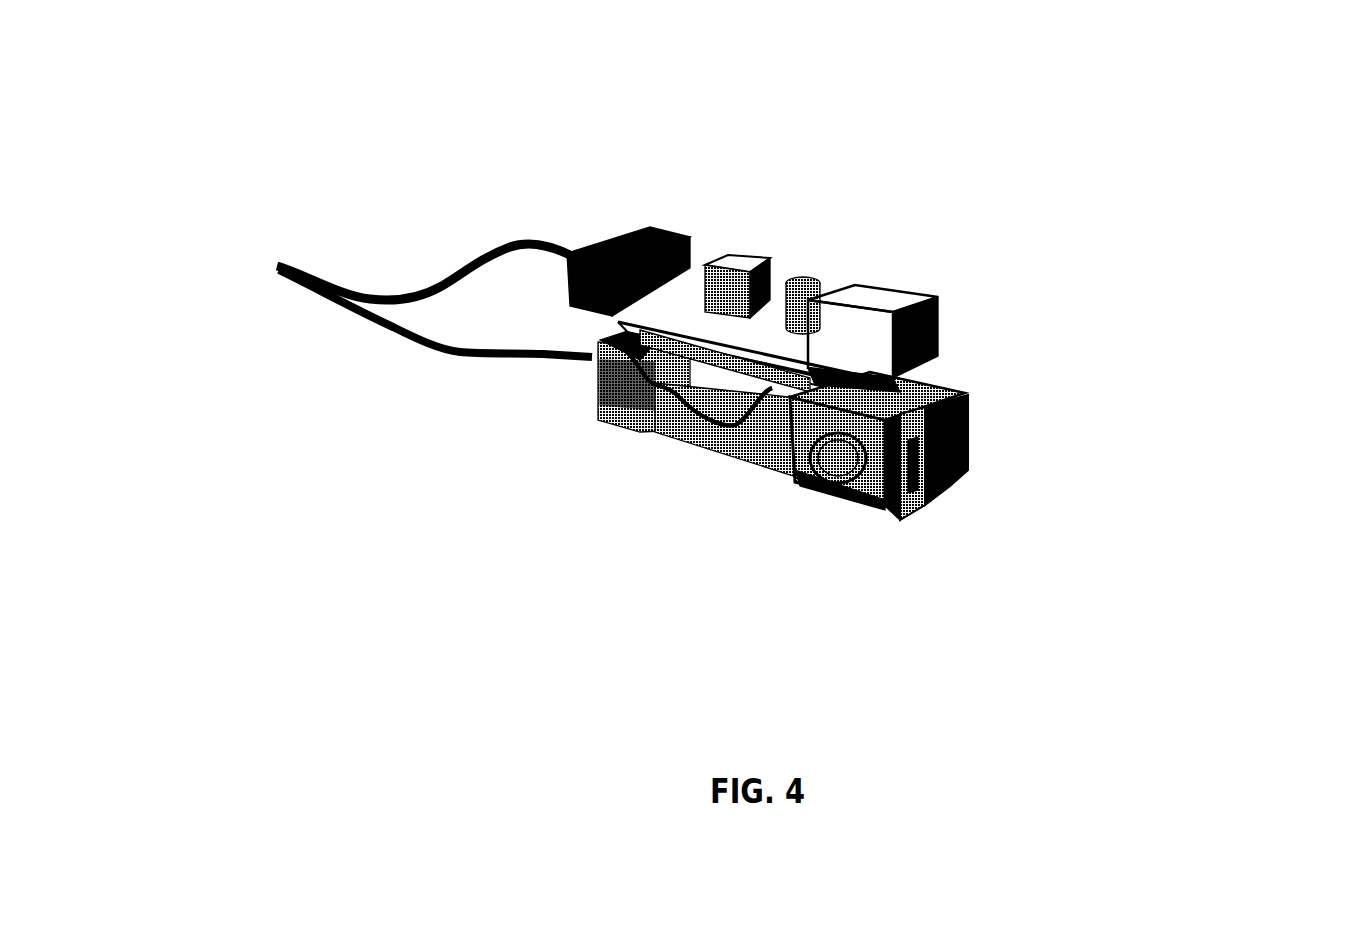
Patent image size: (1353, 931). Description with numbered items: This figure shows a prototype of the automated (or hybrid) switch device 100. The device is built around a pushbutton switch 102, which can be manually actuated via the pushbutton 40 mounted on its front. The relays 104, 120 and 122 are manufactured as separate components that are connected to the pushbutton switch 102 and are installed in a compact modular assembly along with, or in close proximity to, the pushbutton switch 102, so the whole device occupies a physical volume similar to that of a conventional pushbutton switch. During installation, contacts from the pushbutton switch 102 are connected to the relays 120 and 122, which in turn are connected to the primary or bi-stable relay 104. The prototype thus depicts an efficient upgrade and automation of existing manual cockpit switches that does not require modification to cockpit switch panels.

The automated (or hybrid) switch device 100 is at (182, 119).
The pushbutton switch 102 is at (868, 490).
The primary or bi-stable relay 104 is at (935, 333).
The pushbutton 40 is at (955, 475).
The relay 120 is at (665, 392).
The relay 122 is at (665, 392).